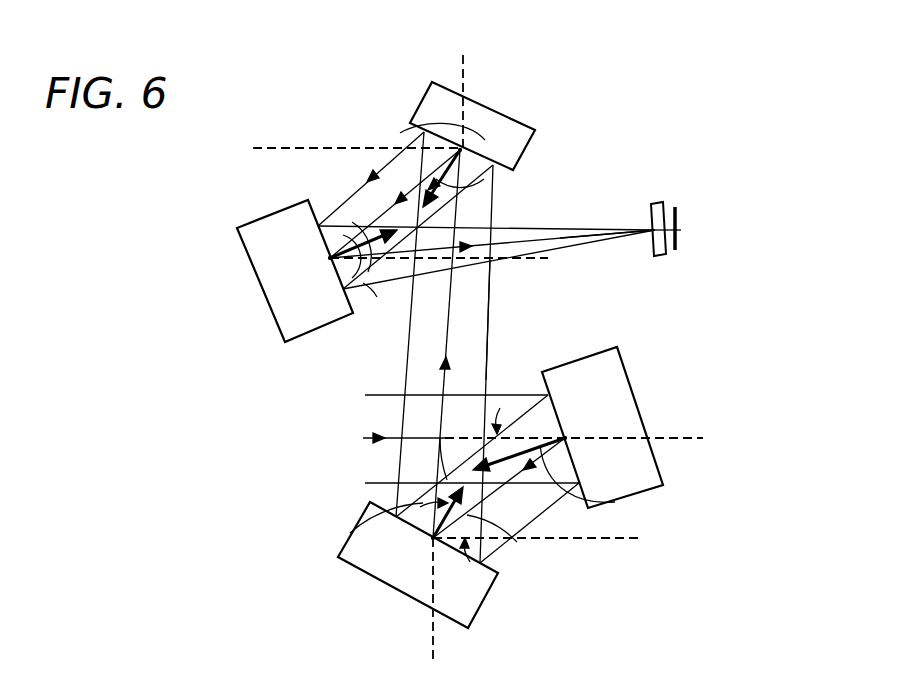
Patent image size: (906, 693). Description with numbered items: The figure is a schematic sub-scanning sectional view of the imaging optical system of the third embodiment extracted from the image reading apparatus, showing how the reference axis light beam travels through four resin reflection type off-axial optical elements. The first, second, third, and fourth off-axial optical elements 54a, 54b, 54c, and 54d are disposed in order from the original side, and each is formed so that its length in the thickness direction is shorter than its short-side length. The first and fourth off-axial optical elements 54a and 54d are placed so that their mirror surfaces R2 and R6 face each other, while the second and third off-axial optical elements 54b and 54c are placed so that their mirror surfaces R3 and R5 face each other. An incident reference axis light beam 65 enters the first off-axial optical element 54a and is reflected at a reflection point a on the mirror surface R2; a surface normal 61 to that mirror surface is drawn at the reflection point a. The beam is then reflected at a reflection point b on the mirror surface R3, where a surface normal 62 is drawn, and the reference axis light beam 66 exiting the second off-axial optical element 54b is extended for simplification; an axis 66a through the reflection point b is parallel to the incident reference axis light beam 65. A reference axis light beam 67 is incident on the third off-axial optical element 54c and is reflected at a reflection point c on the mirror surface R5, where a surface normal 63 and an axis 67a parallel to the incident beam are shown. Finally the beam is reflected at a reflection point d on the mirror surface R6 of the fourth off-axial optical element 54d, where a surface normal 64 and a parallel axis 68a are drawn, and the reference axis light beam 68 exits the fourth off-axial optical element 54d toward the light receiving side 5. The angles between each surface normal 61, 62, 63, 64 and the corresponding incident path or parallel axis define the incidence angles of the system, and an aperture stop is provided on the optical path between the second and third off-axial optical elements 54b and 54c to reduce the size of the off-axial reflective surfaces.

The light receiving element / detector 5 is at (677, 215).
The first reflection type off-axial optical element 54a is at (626, 378).
The second reflection type off-axial optical element 54b is at (357, 562).
The third reflection type off-axial optical element 54c is at (538, 130).
The fourth reflection type off-axial optical element 54d is at (258, 218).
The surface normal 61 is at (615, 502).
The surface normal 62 is at (355, 533).
The surface normal 63 is at (467, 188).
The surface normal 64 is at (350, 222).
The incident reference axis light beam 65 is at (670, 438).
The reference axis light beam 66 is at (425, 650).
The axis 66a is at (613, 543).
The reference axis light beam 67 is at (466, 58).
The axis 67a is at (350, 148).
The reference axis light beam 68 is at (563, 237).
The axis 68a is at (548, 262).
The mirror surface R2 is at (565, 456).
The mirror surface R3 is at (493, 563).
The mirror surface R5 is at (418, 131).
The mirror surface R6 is at (353, 305).
The reflection point a is at (566, 434).
The reflection point b is at (430, 541).
The reflection point c is at (466, 150).
The reflection point d is at (326, 258).